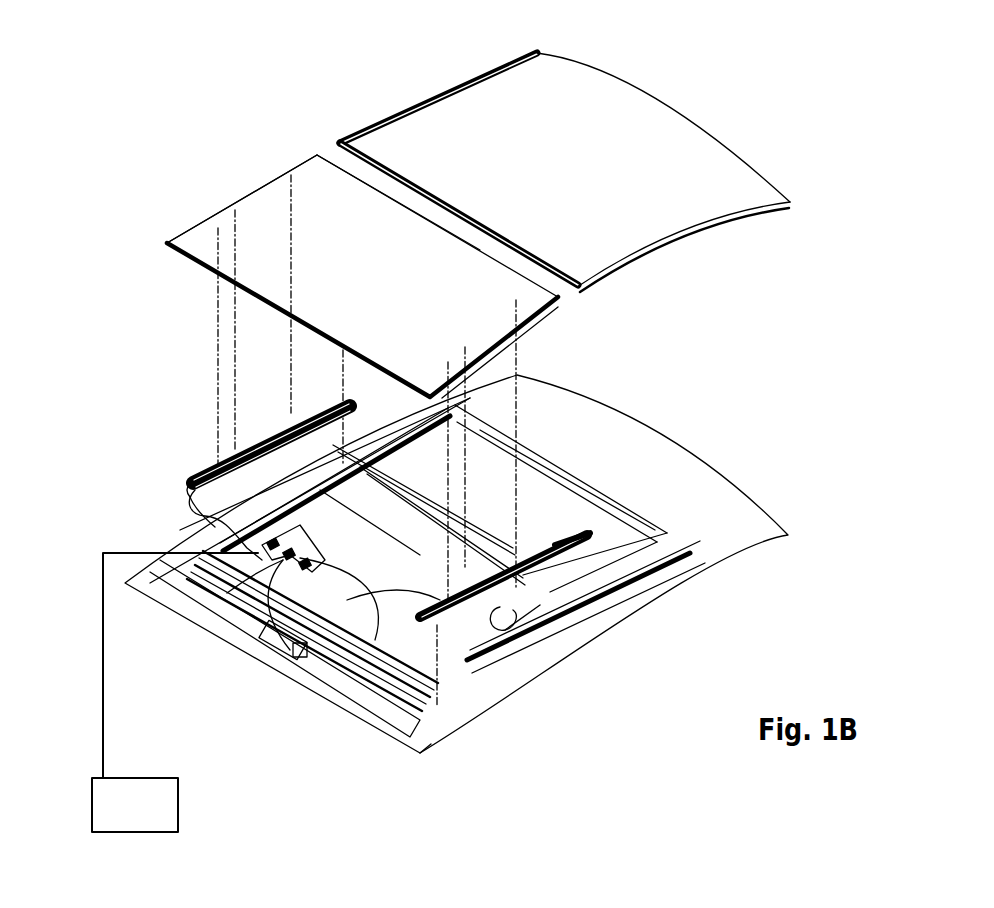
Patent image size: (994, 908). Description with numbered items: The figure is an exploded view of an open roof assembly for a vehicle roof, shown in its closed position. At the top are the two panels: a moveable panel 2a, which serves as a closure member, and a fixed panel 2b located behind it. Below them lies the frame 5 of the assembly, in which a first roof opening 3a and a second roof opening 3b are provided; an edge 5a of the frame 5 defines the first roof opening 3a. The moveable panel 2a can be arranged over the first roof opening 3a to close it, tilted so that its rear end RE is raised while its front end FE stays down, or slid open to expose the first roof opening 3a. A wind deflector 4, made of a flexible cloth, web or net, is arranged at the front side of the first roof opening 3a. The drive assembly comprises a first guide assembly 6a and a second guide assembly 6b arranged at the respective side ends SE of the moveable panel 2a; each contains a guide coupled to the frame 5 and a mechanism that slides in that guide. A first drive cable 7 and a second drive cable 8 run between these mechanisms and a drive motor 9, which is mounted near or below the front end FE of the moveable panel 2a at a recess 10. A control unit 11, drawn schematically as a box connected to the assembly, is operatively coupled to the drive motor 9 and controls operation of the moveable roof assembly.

The moveable panel 2a is at (386, 284).
The fixed panel 2b is at (589, 179).
The first roof opening 3a is at (372, 567).
The second roof opening 3b is at (562, 522).
The wind deflector 4 is at (173, 568).
The frame 5 is at (508, 688).
The edge 5a is at (516, 645).
The first guide assembly 6a is at (527, 590).
The second guide assembly 6b is at (190, 442).
The first drive cable 7 is at (350, 652).
The second drive cable 8 is at (186, 505).
The drive motor 9 is at (227, 593).
The recess 10 is at (350, 593).
The control unit 11 is at (147, 817).
The rear end RE is at (370, 186).
The side end SE is at (246, 195).
The front end FE is at (258, 321).